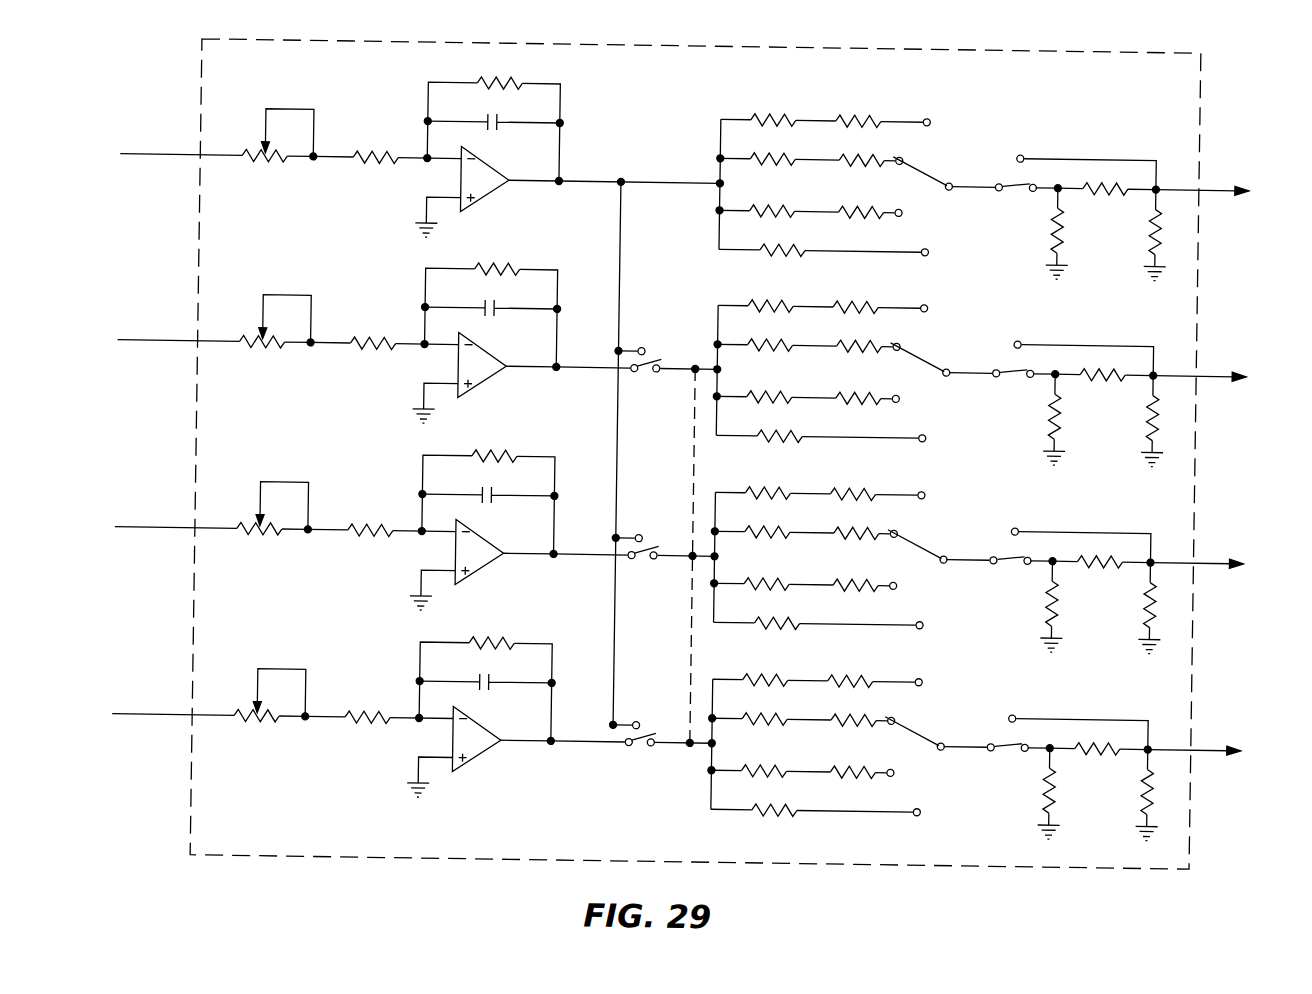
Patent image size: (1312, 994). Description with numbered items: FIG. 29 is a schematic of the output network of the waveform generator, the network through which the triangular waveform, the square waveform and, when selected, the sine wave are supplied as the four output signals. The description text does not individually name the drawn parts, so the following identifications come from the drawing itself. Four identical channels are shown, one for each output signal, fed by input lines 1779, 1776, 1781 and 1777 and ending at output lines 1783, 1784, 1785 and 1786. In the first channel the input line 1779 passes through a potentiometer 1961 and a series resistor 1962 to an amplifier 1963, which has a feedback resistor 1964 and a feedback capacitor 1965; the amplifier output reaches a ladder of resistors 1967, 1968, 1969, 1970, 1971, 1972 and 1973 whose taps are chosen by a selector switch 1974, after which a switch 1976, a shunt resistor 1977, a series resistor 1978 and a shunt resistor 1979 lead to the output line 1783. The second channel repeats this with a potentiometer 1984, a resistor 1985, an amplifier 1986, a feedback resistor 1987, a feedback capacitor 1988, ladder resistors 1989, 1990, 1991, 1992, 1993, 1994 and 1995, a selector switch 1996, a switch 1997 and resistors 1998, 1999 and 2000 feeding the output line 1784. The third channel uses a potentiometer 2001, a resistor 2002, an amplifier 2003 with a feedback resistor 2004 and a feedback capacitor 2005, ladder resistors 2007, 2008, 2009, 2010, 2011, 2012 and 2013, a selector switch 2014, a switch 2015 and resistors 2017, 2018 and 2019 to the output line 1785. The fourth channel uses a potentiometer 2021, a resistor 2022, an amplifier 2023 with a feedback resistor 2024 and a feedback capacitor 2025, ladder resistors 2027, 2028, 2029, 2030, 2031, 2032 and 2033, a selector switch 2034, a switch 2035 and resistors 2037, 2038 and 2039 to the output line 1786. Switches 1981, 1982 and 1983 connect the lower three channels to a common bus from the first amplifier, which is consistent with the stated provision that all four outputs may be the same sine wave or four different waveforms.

The input line 1779 is at (161, 160).
The input line 1776 is at (160, 346).
The input line 1781 is at (161, 536).
The input line 1777 is at (166, 724).
The potentiometer 1961 is at (261, 169).
The resistor 1962 is at (368, 167).
The operational amplifier 1963 is at (493, 198).
The feedback resistor 1964 is at (487, 81).
The feedback capacitor 1965 is at (492, 131).
The resistor 1967 is at (778, 116).
The resistor 1968 is at (863, 114).
The resistor 1969 is at (788, 154).
The resistor 1970 is at (873, 152).
The resistor 1971 is at (789, 204).
The resistor 1972 is at (881, 204).
The resistor 1973 is at (792, 246).
The selector switch 1974 is at (921, 167).
The switch 1976 is at (1008, 185).
The resistor 1977 is at (1049, 237).
The resistor 1978 is at (1093, 184).
The resistor 1979 is at (1147, 240).
The output line 1783 is at (1214, 184).
The potentiometer 1984 is at (261, 356).
The resistor 1985 is at (370, 353).
The operational amplifier 1986 is at (491, 388).
The feedback resistor 1987 is at (494, 269).
The feedback capacitor 1988 is at (493, 317).
The resistor 1989 is at (770, 303).
The resistor 1990 is at (858, 302).
The resistor 1991 is at (780, 342).
The resistor 1992 is at (866, 340).
The resistor 1993 is at (779, 394).
The resistor 1994 is at (867, 392).
The resistor 1995 is at (797, 432).
The selector switch 1996 is at (921, 353).
The switch 1997 is at (1009, 370).
The resistor 1998 is at (1046, 423).
The resistor 1999 is at (1098, 370).
The resistor 2000 is at (1146, 423).
The output line 1784 is at (1218, 370).
The switch 1981 is at (651, 363).
The switch 1982 is at (647, 564).
The switch 1983 is at (650, 753).
The potentiometer 2001 is at (264, 541).
The resistor 2002 is at (373, 532).
The operational amplifier 2003 is at (492, 573).
The feedback resistor 2004 is at (496, 459).
The feedback capacitor 2005 is at (498, 502).
The resistor 2007 is at (783, 490).
The resistor 2008 is at (871, 488).
The resistor 2009 is at (793, 529).
The resistor 2010 is at (881, 527).
The resistor 2011 is at (784, 580).
The resistor 2012 is at (874, 578).
The resistor 2013 is at (799, 618).
The selector switch 2014 is at (928, 540).
The switch 2015 is at (1014, 559).
The resistor 2017 is at (1050, 609).
The resistor 2018 is at (1100, 558).
The resistor 2019 is at (1148, 611).
The output line 1785 is at (1220, 558).
The potentiometer 2021 is at (269, 730).
The resistor 2022 is at (371, 719).
The operational amplifier 2023 is at (491, 761).
The feedback resistor 2024 is at (495, 647).
The feedback capacitor 2025 is at (492, 691).
The resistor 2027 is at (785, 678).
The resistor 2028 is at (872, 676).
The resistor 2029 is at (790, 718).
The resistor 2030 is at (884, 716).
The resistor 2031 is at (786, 768).
The resistor 2032 is at (875, 766).
The resistor 2033 is at (804, 807).
The selector switch 2034 is at (926, 730).
The switch 2035 is at (1014, 749).
The resistor 2037 is at (1051, 801).
The resistor 2038 is at (1101, 748).
The resistor 2039 is at (1147, 806).
The output line 1786 is at (1223, 748).